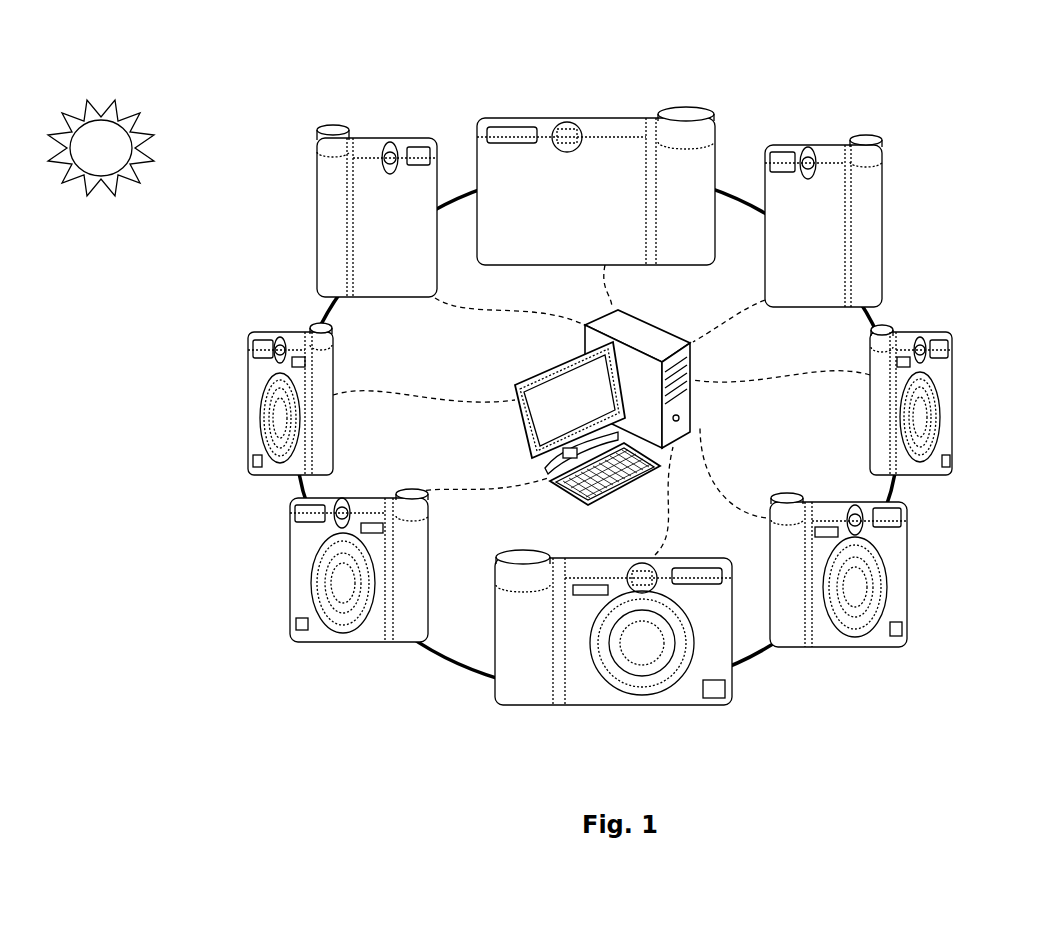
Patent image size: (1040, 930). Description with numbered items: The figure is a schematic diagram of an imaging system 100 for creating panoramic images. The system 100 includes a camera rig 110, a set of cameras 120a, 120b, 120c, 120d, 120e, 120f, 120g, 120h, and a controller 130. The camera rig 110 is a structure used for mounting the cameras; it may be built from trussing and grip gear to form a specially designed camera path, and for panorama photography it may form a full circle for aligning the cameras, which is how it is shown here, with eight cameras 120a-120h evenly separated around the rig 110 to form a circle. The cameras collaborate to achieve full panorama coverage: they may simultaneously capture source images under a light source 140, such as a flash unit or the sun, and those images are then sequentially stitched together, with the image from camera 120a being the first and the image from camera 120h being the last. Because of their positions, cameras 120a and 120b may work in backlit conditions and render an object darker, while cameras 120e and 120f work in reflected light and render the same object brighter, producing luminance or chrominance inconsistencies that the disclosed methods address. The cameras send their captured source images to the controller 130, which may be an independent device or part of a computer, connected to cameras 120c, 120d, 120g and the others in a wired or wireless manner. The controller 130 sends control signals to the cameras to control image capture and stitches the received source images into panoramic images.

The imaging system 100 is at (739, 78).
The camera rig 110 is at (322, 325).
The camera 120a is at (377, 203).
The camera 120b is at (264, 399).
The camera 120c is at (359, 580).
The camera 120d is at (613, 642).
The camera 120e is at (838, 583).
The camera 120f is at (940, 400).
The camera 120g is at (850, 221).
The camera 120h is at (596, 177).
The controller 130 is at (648, 325).
The light source 140 is at (152, 137).